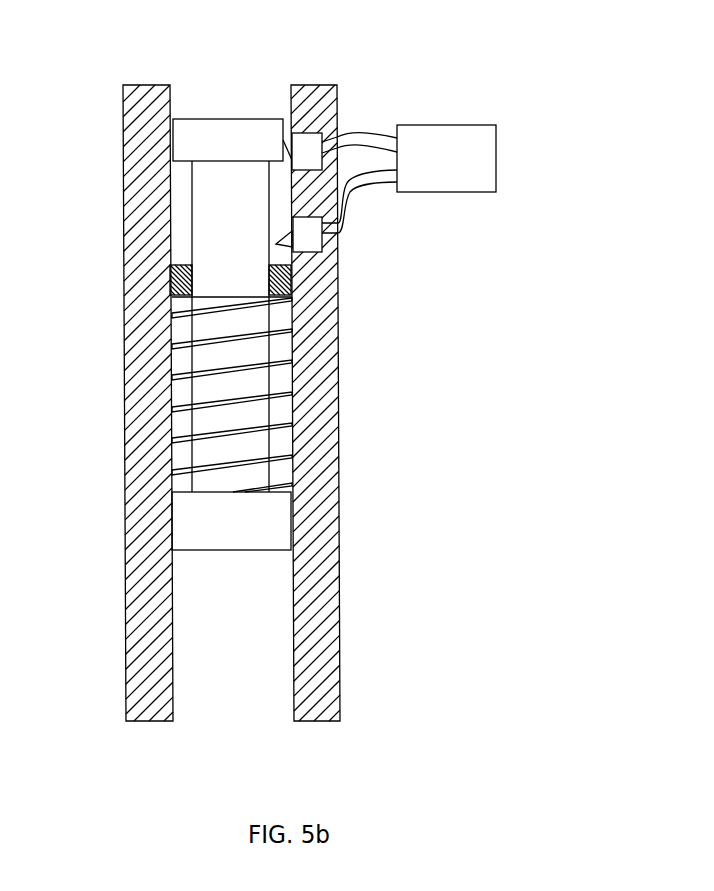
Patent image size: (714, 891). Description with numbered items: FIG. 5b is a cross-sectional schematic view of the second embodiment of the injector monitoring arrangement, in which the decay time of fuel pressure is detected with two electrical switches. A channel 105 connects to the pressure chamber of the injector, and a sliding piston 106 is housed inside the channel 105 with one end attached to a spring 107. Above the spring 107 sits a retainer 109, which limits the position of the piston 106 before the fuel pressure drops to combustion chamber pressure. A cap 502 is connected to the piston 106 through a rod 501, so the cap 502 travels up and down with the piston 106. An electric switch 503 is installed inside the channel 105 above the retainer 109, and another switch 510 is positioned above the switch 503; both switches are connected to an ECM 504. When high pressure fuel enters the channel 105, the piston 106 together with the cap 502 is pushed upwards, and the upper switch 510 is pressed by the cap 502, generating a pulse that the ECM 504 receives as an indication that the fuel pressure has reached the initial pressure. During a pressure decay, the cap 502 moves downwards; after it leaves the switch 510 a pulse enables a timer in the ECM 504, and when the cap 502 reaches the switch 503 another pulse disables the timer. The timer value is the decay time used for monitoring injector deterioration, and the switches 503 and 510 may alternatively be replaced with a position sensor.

The channel 105 is at (252, 682).
The sliding piston 106 is at (252, 533).
The spring 107 is at (291, 357).
The retainer 109 is at (167, 282).
The rod 501 is at (292, 287).
The cap 502 is at (229, 133).
The electric switch 503 is at (305, 235).
The ECM 504 is at (445, 192).
The switch 510 is at (307, 142).